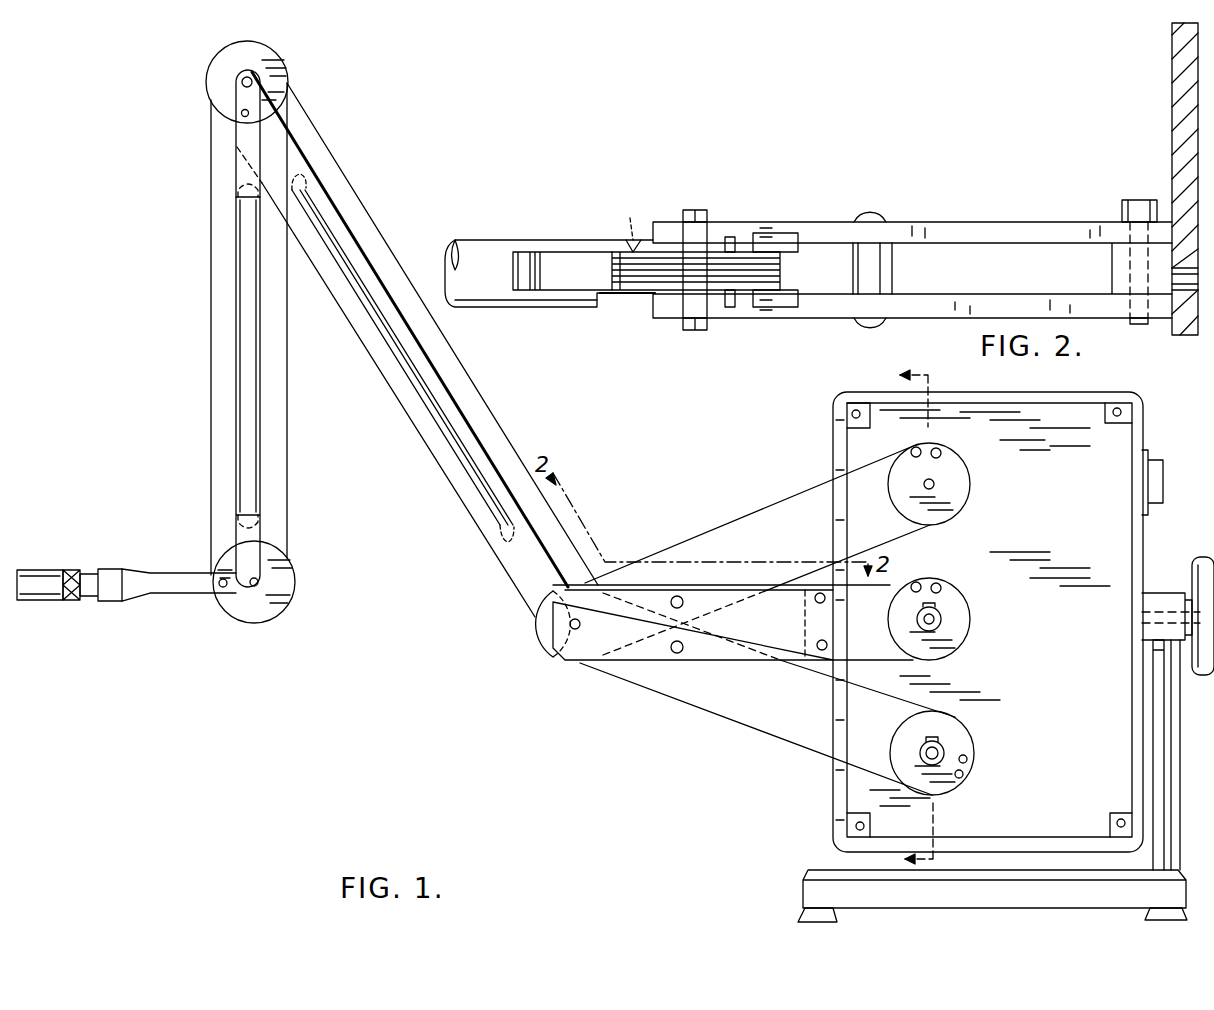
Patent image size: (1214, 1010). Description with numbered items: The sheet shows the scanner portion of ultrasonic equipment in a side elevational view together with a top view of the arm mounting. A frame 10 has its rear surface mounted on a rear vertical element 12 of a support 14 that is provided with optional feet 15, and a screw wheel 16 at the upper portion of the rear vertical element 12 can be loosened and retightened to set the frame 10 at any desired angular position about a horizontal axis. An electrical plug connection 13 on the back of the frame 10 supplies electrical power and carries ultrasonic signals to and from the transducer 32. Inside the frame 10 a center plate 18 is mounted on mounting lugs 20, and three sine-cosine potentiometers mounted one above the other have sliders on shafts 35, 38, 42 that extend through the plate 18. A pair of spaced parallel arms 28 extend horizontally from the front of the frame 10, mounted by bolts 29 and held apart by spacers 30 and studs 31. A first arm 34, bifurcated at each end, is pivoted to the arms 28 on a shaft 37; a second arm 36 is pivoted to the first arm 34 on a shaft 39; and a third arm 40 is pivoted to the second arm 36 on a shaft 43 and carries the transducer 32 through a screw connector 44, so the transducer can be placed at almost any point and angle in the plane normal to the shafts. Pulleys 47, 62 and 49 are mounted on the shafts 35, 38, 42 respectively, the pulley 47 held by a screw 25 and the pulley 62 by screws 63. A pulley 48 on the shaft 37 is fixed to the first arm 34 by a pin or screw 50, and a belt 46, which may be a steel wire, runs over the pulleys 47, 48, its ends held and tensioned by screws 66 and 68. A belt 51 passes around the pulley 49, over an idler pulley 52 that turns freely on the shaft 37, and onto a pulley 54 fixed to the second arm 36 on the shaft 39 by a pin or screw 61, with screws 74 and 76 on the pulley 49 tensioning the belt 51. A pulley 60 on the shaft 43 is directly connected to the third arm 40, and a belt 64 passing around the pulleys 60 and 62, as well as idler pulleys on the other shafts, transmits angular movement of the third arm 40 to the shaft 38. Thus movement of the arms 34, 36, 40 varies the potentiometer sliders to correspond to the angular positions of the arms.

In FIG. 1, the frame 10 is at (834, 438).
In FIG. 2, the frame 10 is at (1178, 92).
In FIG. 1, the rear vertical element 12 is at (1170, 722).
In FIG. 1, the electrical plug connection 13 is at (1162, 472).
In FIG. 1, the support 14 is at (950, 888).
In FIG. 1, the feet 15 is at (802, 916).
In FIG. 1, the screw wheel 16 is at (1200, 566).
In FIG. 1, the center plate 18 is at (1060, 432).
In FIG. 1, the mounting lugs 20 is at (1122, 412).
In FIG. 1, the screw 25 is at (926, 749).
In FIG. 1, the spaced parallel arms 28 is at (640, 662).
In FIG. 2, the spaced parallel arms 28 is at (970, 298).
In FIG. 1, the bolts 29 is at (818, 640).
In FIG. 2, the bolts 29 is at (1135, 205).
In FIG. 2, the spacers 30 is at (880, 266).
In FIG. 1, the studs 31 is at (678, 654).
In FIG. 2, the studs 31 is at (869, 212).
In FIG. 1, the transducer 32 is at (30, 578).
In FIG. 1, the first arm 34 is at (438, 414).
In FIG. 2, the first arm 34 is at (478, 245).
In FIG. 1, the shaft 35 is at (941, 742).
In FIG. 1, the second arm 36 is at (243, 272).
In FIG. 1, the shaft 37 is at (572, 628).
In FIG. 2, the shaft 37 is at (697, 325).
In FIG. 1, the shaft 38 is at (936, 620).
In FIG. 1, the shaft 39 is at (243, 80).
In FIG. 1, the third arm 40 is at (157, 576).
In FIG. 1, the shaft 42 is at (935, 486).
In FIG. 1, the shaft 43 is at (254, 587).
In FIG. 1, the screw connector 44 is at (72, 600).
In FIG. 1, the belt 46 is at (718, 722).
In FIG. 1, the pulley 47 is at (940, 786).
In FIG. 2, the pulley 48 is at (745, 250).
In FIG. 1, the pulley 49 is at (962, 501).
In FIG. 2, the pin or screw 50 is at (625, 224).
In FIG. 1, the belt 51 is at (354, 184).
In FIG. 1, the idler pulley 52 is at (569, 626).
In FIG. 2, the idler pulley 52 is at (636, 292).
In FIG. 1, the pulley 54 is at (282, 70).
In FIG. 1, the pulley 60 is at (286, 590).
In FIG. 1, the pin or screw 61 is at (243, 115).
In FIG. 1, the pulley 62 is at (962, 608).
In FIG. 1, the screws 63 is at (220, 587).
In FIG. 1, the belt 64 is at (210, 402).
In FIG. 1, the screw 66 is at (968, 759).
In FIG. 1, the screw 68 is at (964, 775).
In FIG. 1, the screw 74 is at (913, 450).
In FIG. 1, the screw 76 is at (940, 452).